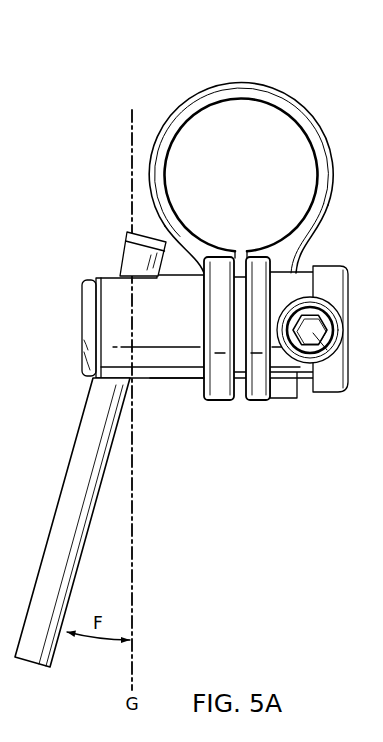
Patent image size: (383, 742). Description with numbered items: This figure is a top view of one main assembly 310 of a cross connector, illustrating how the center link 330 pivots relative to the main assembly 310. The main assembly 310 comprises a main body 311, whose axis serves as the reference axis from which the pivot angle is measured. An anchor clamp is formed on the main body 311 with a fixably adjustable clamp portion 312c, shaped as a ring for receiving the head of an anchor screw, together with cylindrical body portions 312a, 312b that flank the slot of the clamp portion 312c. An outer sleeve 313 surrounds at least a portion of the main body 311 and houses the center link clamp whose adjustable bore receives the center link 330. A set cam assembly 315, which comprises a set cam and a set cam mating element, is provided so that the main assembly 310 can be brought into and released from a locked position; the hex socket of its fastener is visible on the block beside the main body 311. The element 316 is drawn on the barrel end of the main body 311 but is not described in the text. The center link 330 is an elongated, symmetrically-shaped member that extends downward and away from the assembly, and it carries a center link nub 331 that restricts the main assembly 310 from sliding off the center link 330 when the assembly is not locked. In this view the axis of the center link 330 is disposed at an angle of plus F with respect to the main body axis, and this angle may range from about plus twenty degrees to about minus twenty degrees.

The main assembly 310 is at (193, 66).
The main body 311 is at (303, 267).
The cylindrical body portion 312a is at (253, 402).
The cylindrical body portion 312b is at (222, 402).
The fixably adjustable clamp portion 312c is at (297, 102).
The outer sleeve 313 is at (180, 383).
The set cam assembly 315 is at (323, 392).
The cam barrel 316 is at (83, 323).
The center link 330 is at (70, 460).
The center link nub 331 is at (140, 233).